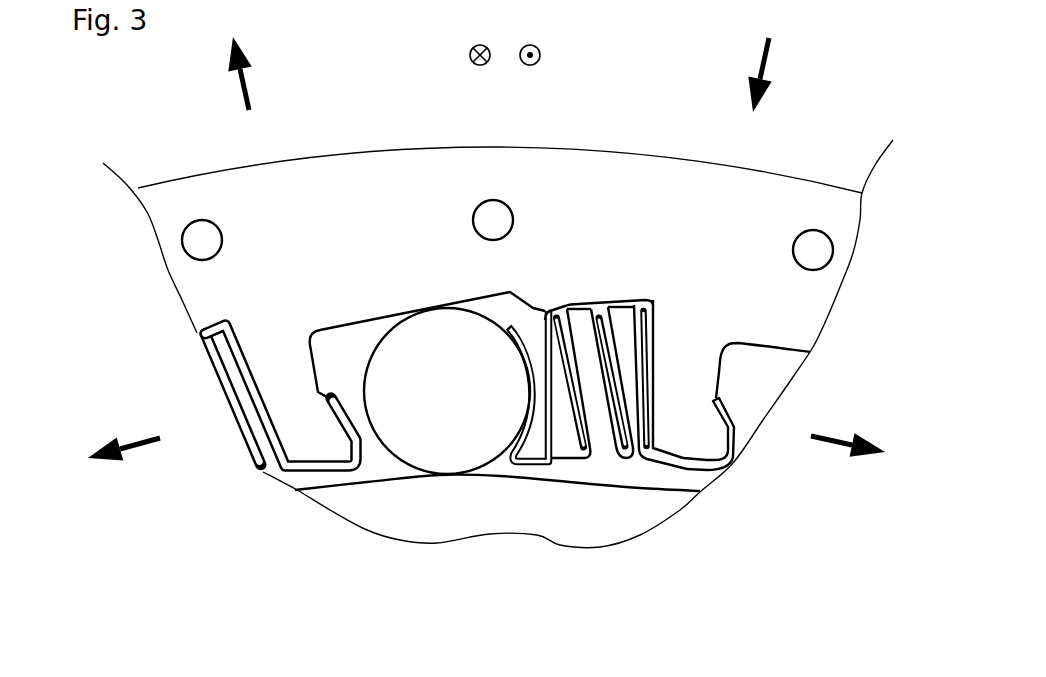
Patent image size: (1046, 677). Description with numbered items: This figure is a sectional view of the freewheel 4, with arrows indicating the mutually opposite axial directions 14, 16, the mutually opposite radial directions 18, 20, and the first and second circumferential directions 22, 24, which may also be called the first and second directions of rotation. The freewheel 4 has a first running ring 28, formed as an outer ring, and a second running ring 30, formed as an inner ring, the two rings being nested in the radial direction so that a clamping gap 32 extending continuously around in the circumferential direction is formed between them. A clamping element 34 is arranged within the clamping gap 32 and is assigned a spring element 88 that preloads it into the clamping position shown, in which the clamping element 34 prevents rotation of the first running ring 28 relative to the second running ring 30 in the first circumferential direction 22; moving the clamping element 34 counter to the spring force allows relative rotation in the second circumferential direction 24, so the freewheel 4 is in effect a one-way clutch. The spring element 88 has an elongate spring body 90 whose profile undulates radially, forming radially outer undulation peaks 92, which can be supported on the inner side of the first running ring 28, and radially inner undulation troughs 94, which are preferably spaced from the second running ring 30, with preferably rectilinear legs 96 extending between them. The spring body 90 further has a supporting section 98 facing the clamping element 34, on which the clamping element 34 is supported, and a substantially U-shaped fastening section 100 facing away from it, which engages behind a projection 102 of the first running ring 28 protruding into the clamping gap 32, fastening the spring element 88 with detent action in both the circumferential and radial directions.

The freewheel 4 is at (360, 137).
The axial direction 14 is at (542, 50).
The axial direction 16 is at (468, 57).
The radial direction 18 is at (237, 95).
The radial direction 20 is at (767, 62).
The first circumferential direction 22 is at (830, 445).
The second circumferential direction 24 is at (135, 447).
The first running ring 28 is at (652, 188).
The second running ring 30 is at (522, 513).
The clamping gap 32 is at (351, 317).
The clamping element 34 is at (442, 440).
The spring element 88 is at (642, 470).
The spring body 90 is at (576, 460).
The radially outer undulation peaks 92 is at (593, 306).
The radially inner undulation troughs 94 is at (537, 463).
The legs 96 is at (592, 334).
The supporting section 98 is at (525, 395).
The fastening section 100 is at (687, 463).
The projection 102 is at (683, 378).